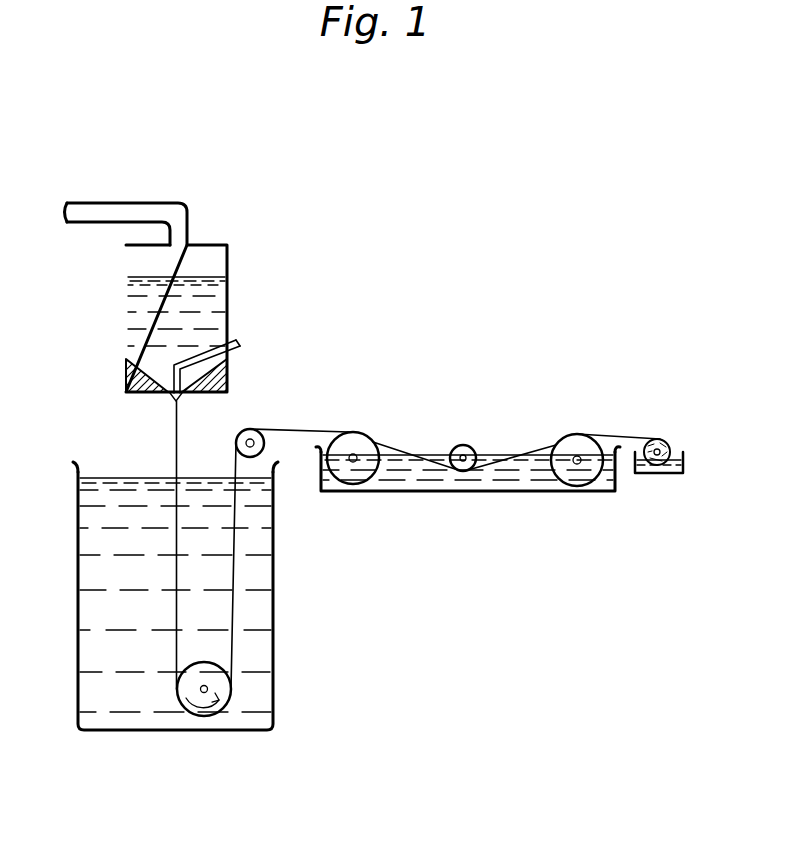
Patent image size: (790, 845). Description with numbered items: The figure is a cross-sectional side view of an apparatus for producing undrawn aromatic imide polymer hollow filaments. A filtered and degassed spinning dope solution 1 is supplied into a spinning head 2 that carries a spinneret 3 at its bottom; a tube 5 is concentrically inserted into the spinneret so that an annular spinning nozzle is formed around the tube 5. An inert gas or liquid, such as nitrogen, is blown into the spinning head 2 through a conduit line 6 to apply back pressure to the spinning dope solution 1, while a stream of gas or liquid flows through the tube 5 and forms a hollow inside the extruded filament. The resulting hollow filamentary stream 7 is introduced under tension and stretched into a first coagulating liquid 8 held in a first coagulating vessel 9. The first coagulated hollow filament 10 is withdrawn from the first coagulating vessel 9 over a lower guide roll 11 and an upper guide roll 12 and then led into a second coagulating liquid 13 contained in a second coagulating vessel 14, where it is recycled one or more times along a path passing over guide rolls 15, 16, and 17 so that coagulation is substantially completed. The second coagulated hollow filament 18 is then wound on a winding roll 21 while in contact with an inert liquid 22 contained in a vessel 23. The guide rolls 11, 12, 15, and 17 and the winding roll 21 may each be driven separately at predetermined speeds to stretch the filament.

The spinning dope solution 1 is at (215, 318).
The spinning head 2 is at (228, 260).
The spinneret 3 is at (187, 397).
The tube 5 is at (229, 392).
The conduit line 6 is at (130, 203).
The hollow filamentary stream 7 is at (178, 462).
The first coagulating liquid 8 is at (78, 571).
The first coagulating vessel 9 is at (274, 608).
The first coagulated hollow filament 10 is at (234, 548).
The guide roll 11 is at (222, 684).
The guide roll 12 is at (265, 443).
The second coagulating liquid 13 is at (515, 478).
The second coagulating vessel 14 is at (410, 493).
The guide roll 15 is at (355, 440).
The guide roll 16 is at (465, 452).
The guide roll 17 is at (578, 441).
The second coagulated hollow filament 18 is at (640, 437).
The winding roll 21 is at (668, 449).
The inert liquid 22 is at (676, 474).
The vessel 23 is at (660, 476).